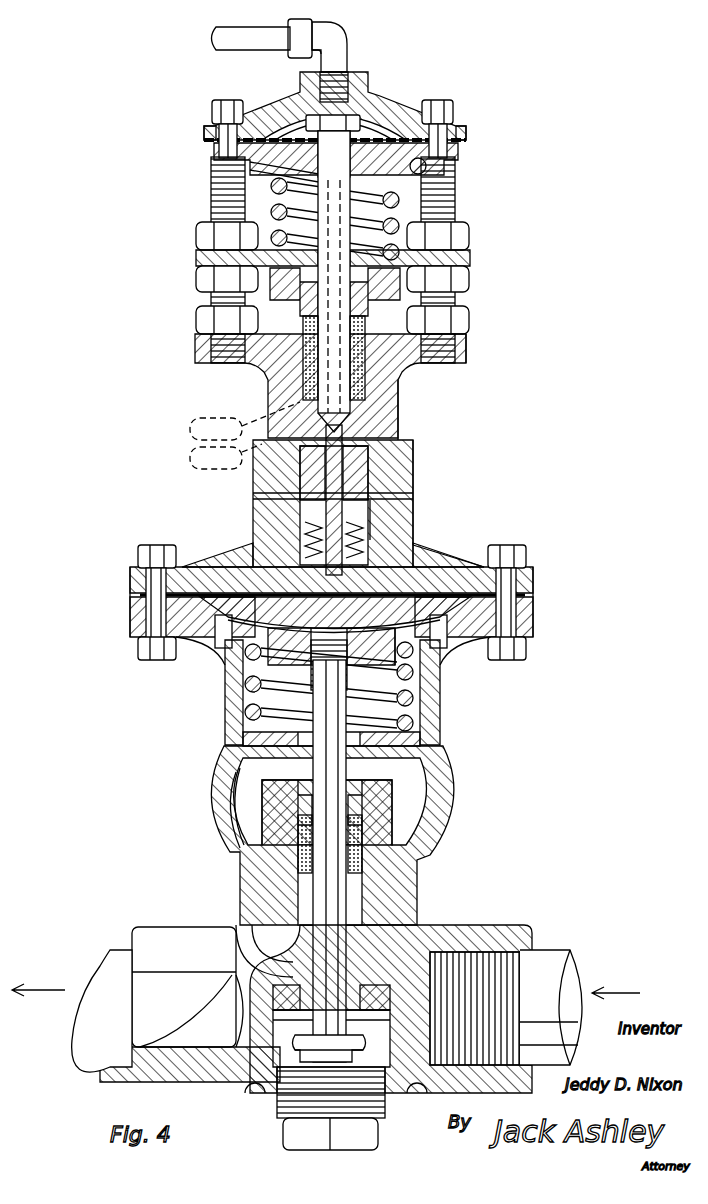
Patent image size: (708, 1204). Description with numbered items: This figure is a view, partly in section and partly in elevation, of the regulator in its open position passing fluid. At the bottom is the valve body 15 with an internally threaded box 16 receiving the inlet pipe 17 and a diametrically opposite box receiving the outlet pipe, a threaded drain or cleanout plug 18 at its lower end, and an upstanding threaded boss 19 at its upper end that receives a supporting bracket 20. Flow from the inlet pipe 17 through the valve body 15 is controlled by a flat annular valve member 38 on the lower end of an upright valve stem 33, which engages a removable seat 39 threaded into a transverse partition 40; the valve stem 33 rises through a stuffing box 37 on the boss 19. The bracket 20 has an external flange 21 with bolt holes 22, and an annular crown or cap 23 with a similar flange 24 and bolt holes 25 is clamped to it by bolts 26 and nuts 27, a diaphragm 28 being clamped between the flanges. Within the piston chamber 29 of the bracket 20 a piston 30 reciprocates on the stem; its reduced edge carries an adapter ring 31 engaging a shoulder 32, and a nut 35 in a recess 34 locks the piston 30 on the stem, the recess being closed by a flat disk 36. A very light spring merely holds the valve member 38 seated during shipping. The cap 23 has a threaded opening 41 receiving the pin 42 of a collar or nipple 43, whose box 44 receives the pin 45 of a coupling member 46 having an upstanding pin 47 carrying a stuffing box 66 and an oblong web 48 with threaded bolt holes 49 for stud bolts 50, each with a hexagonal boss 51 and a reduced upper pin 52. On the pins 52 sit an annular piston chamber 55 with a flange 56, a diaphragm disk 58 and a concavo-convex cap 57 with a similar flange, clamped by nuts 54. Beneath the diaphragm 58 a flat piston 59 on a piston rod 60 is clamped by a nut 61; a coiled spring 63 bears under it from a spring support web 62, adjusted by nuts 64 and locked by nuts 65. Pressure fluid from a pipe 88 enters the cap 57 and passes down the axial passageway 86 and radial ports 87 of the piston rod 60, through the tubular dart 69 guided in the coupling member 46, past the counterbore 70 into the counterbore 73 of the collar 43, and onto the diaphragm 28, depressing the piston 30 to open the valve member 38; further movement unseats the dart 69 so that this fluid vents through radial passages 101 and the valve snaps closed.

The pipe 88 is at (214, 37).
The concavo-convex crown or cap 57 is at (292, 108).
The nut 61 is at (360, 122).
The circular diaphragm disk 58 is at (205, 148).
The external radially extending flange 56 is at (462, 152).
The annular piston chamber 55 is at (416, 172).
The reduced upstanding co-axial pin 52 is at (228, 100).
The nut 54 is at (212, 100).
The stud pin or bolt 50 is at (211, 198).
The flat circular piston 59 is at (279, 178).
The coiled spring 63 is at (391, 200).
The nut 65 is at (214, 236).
The spring support or web 62 is at (290, 258).
The nut 64 is at (214, 278).
The hexagonal boss 51 is at (214, 322).
The stuffing box 66 is at (372, 296).
The supporting web or bracket 48 is at (200, 350).
The screw-threaded bolt hole 49 is at (450, 363).
The piston rod 60 is at (345, 260).
The upstanding screw-threaded pin 47 is at (262, 385).
The axial passageway 86 is at (245, 421).
The radial port 87 is at (226, 456).
The counterbore 70 is at (400, 420).
The nipple or coupling member 46 is at (396, 412).
The reduced externally screw-threaded pin 45 is at (370, 450).
The internally screw-threaded box 44 is at (400, 460).
The collar or nipple 43 is at (402, 478).
The vent passage 101 is at (262, 500).
The counterbore 73 is at (385, 520).
The reduced externally screw-threaded pin 42 is at (350, 524).
The tubular pin or dart 69 is at (300, 532).
The axial screw-threaded opening 41 is at (395, 556).
The annular crown or cap 23 is at (182, 560).
The diaphragm 28 is at (533, 597).
The flange 24 is at (130, 574).
The bolt hole 25 is at (130, 594).
The bolt hole 22 is at (130, 614).
The radially extending external flange 21 is at (130, 628).
The bolt 26 is at (150, 552).
The nut 27 is at (140, 652).
The flat circular plate or disk 36 is at (335, 612).
The annular axial sump or recess 34 is at (334, 614).
The piston 30 is at (268, 650).
The adapter ring 31 is at (440, 655).
The shoulder 32 is at (250, 650).
The nut 35 is at (440, 710).
The piston chamber 29 is at (420, 692).
The valve stem 33 is at (346, 772).
The supporting bracket 20 is at (445, 785).
The stuffing box 37 is at (400, 812).
The valve body 15 is at (400, 912).
The upstanding externally screw-threaded boss 19 is at (240, 940).
The internally screw-threaded box 16 is at (490, 930).
The inlet pipe 17 is at (551, 1007).
The transverse partition 40 is at (390, 1000).
The removable seat 39 is at (385, 1016).
The flat annular valve member 38 is at (366, 1042).
The drain or cleanout plug 18 is at (283, 1132).